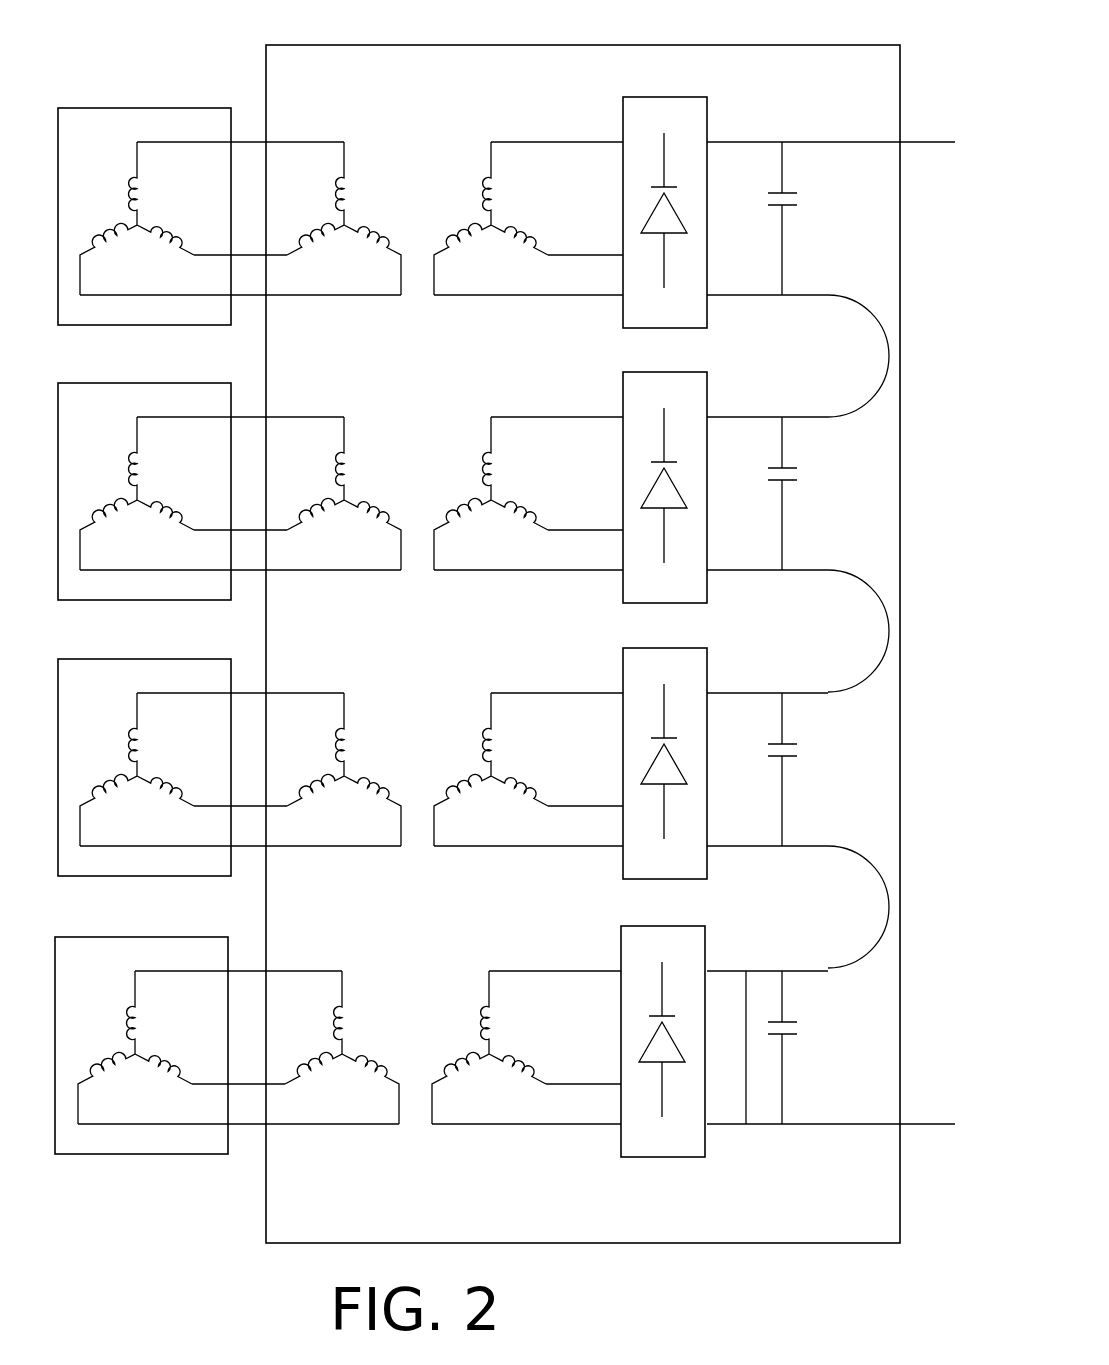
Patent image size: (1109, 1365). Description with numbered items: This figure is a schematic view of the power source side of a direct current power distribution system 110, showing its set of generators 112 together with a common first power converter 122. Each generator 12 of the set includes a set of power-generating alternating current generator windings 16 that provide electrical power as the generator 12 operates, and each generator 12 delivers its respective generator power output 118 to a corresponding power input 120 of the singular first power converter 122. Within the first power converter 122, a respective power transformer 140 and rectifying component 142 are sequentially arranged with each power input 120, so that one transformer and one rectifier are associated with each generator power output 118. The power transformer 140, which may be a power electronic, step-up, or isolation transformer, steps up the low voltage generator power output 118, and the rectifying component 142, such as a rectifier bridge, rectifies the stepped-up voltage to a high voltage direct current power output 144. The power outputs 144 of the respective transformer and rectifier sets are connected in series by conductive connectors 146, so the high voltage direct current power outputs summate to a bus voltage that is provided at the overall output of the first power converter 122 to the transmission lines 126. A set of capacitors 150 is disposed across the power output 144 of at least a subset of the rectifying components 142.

The power distribution system 110 is at (663, 25).
The set of generators 112 is at (131, 78).
The generator 12 is at (120, 139).
The alternating current generator windings 16 is at (117, 199).
The generator power output 118 is at (244, 107).
The power input 120 is at (254, 160).
The first power converter 122 is at (557, 85).
The power transformer 140 is at (373, 181).
The rectifying component 142 is at (688, 127).
The power output 144 is at (825, 122).
The conductive connectors 146 is at (870, 312).
The capacitors 150 is at (798, 203).
The transmission lines 126 is at (930, 142).